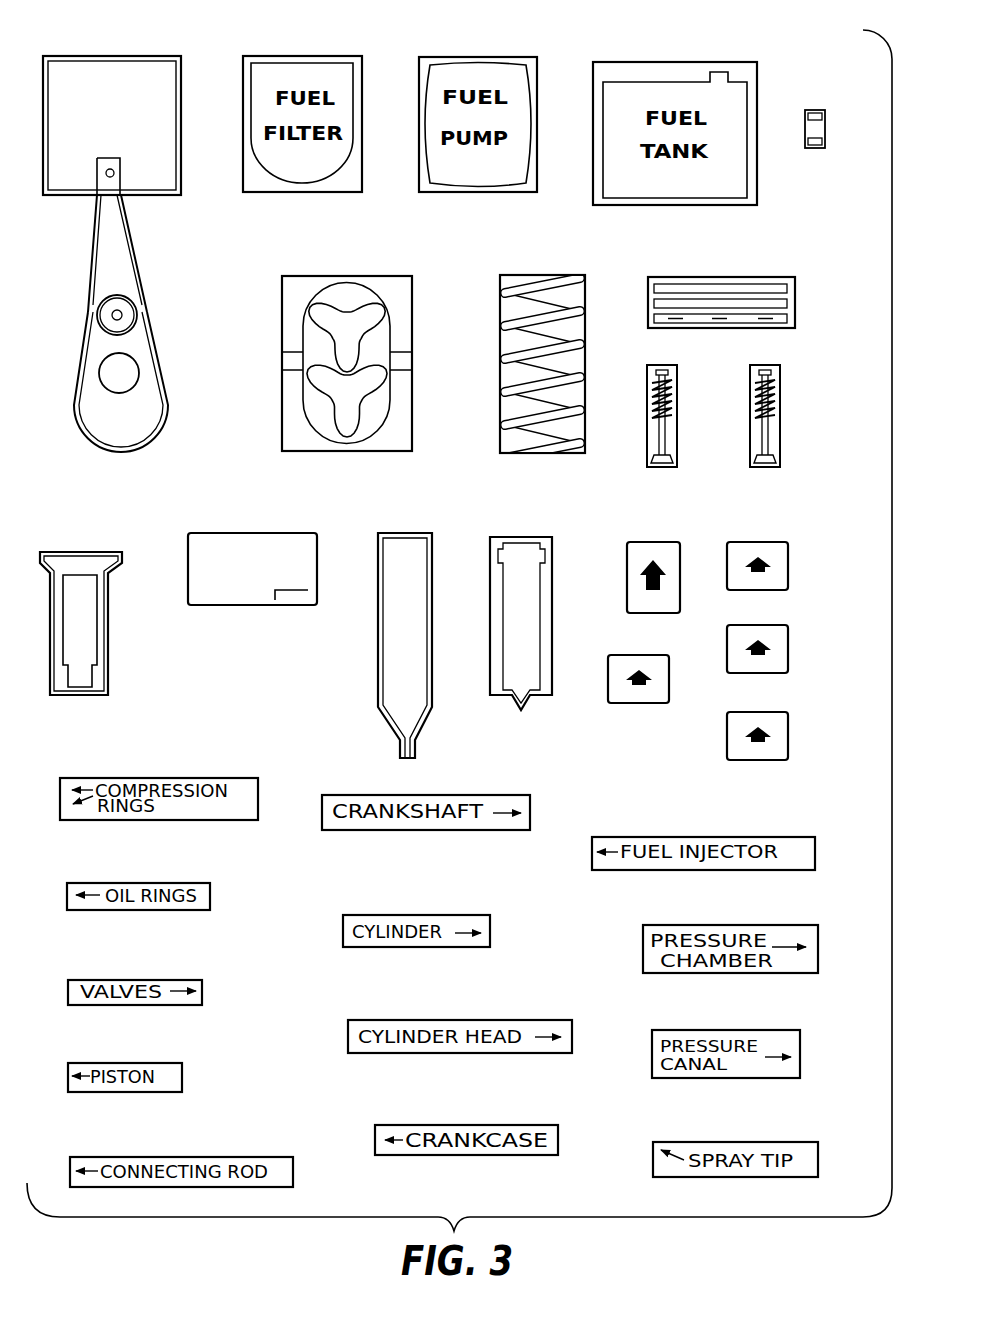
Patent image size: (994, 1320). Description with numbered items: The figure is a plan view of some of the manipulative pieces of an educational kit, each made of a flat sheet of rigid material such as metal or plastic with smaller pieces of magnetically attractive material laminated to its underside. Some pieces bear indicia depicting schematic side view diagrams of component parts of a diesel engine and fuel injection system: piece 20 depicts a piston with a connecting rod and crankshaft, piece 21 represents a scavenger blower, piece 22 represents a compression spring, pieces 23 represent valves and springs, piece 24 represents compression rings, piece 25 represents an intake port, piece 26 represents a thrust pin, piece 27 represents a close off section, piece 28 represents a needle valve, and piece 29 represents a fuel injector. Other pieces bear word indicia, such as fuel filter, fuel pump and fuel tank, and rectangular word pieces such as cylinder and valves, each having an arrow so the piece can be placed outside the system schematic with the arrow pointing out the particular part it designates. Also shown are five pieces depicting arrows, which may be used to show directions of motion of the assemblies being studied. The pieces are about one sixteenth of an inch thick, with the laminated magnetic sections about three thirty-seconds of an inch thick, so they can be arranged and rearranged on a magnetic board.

The piston with connecting rod and crankshaft piece 20 is at (130, 262).
The scavenger blower piece 21 is at (402, 432).
The compression spring piece 22 is at (575, 438).
The valves and springs pieces 23 is at (757, 440).
The compression rings piece 24 is at (790, 313).
The intake port piece 25 is at (822, 135).
The thrust pin piece 26 is at (108, 683).
The close off section piece 27 is at (262, 590).
The needle valve piece 28 is at (410, 720).
The fuel injector piece 29 is at (530, 685).